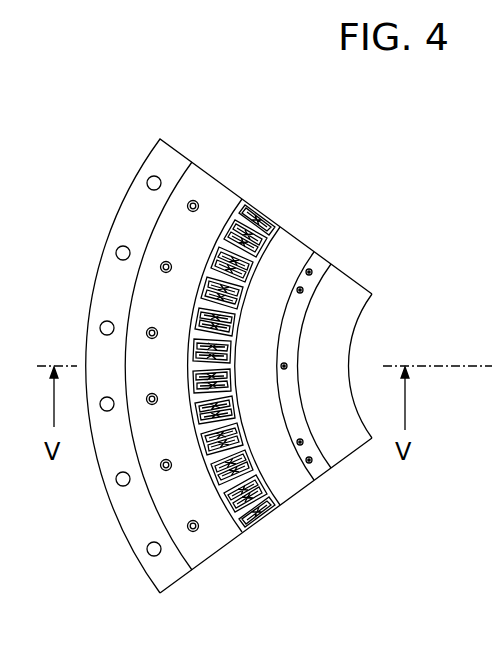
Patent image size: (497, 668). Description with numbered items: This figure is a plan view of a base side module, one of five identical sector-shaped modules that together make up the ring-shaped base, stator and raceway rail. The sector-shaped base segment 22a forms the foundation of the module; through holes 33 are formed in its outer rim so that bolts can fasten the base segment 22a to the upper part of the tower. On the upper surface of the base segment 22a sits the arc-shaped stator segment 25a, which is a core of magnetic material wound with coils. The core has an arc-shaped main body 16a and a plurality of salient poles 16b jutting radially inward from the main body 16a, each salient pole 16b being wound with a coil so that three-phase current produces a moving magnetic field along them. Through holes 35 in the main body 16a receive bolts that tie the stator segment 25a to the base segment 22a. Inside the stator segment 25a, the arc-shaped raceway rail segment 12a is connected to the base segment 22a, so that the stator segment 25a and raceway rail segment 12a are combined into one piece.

The raceway rail segment 12a is at (294, 305).
The main body 16a is at (207, 518).
The salient poles 16b is at (228, 450).
The base segment 22a is at (338, 296).
The stator segment 25a is at (224, 230).
The through holes 33 is at (148, 183).
The through holes 35 is at (195, 202).